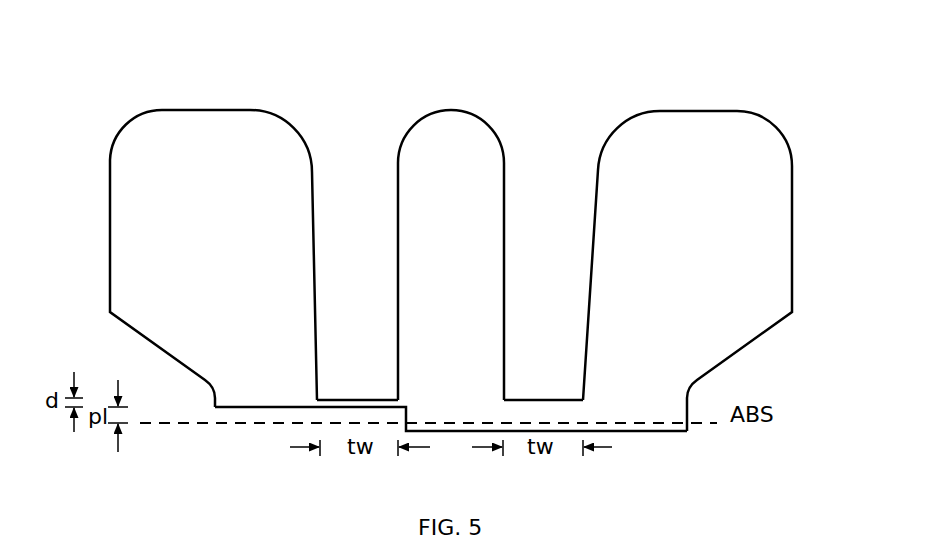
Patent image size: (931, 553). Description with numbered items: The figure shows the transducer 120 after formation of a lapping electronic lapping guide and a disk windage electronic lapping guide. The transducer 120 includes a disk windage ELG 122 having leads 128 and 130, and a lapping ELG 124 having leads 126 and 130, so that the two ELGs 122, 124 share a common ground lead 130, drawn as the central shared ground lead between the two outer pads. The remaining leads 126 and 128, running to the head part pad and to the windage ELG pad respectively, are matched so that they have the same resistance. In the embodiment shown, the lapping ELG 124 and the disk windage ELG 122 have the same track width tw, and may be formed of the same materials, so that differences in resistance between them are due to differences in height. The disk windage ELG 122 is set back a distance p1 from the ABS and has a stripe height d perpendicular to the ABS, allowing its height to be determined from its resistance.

The transducer 120 is at (471, 58).
The disk windage ELG 122 is at (385, 392).
The lapping ELG 124 is at (516, 385).
The lead 126 is at (813, 178).
The lead 128 is at (98, 193).
The ground lead 130 is at (375, 209).